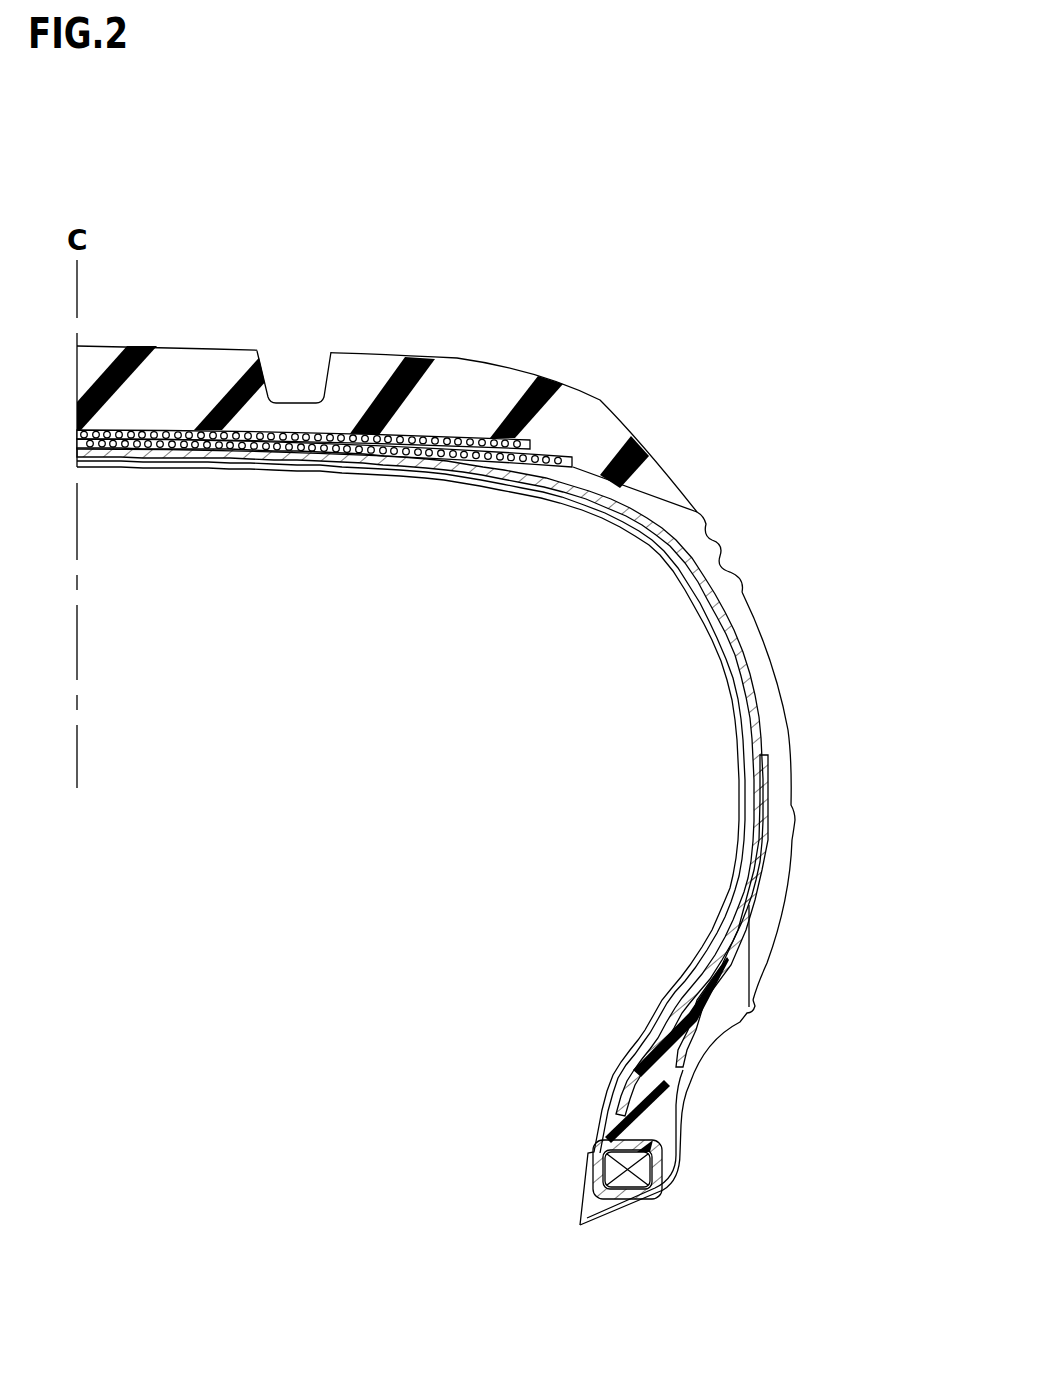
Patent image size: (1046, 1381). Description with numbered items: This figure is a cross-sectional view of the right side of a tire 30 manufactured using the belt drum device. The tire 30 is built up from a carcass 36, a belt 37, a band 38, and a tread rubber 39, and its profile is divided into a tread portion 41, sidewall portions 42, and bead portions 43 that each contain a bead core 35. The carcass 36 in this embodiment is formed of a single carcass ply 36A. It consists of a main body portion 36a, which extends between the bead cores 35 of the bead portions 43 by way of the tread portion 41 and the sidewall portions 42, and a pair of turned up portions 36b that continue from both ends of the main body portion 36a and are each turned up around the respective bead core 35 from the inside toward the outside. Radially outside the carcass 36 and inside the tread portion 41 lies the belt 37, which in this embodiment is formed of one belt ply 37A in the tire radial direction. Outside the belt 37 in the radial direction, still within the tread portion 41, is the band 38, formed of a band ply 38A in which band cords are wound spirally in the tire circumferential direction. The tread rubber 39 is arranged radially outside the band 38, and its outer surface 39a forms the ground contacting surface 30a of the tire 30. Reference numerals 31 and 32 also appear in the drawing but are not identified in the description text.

The tire 30 is at (746, 258).
The ground contacting surface 30a is at (462, 360).
The tread rubber 31 is at (645, 403).
The belt layer 32 is at (413, 272).
The bead core 35 is at (642, 1170).
The carcass 36 is at (422, 836).
The carcass ply 36A is at (573, 722).
The main body portion 36a is at (752, 723).
The turned up portion 36b is at (763, 812).
The belt 37 is at (303, 359).
The belt ply 37A is at (163, 430).
The band 38 is at (324, 368).
The band ply 38A is at (293, 445).
The tread rubber 39 is at (358, 382).
The outer surface 39a is at (410, 407).
The tread portion 41 is at (511, 312).
The sidewall portion 42 is at (798, 717).
The bead portion 43 is at (590, 1053).